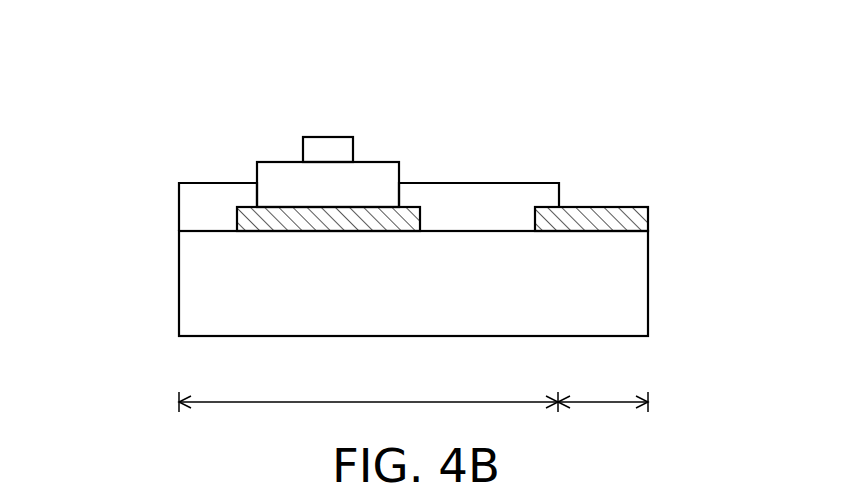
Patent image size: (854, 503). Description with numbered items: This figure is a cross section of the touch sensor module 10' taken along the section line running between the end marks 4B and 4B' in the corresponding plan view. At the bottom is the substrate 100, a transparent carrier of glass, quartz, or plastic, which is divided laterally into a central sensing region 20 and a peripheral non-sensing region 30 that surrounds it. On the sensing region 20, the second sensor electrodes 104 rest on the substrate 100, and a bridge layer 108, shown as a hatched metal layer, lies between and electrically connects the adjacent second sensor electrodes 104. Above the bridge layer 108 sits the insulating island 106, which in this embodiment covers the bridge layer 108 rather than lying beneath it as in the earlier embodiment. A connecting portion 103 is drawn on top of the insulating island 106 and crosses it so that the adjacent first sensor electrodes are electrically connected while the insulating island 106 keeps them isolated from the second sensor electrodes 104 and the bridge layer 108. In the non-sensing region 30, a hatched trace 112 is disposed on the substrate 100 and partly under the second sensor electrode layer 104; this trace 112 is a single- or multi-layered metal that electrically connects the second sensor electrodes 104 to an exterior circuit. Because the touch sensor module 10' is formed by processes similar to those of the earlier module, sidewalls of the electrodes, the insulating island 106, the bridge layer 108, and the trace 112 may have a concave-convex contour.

The touch sensor module 10' is at (69, 64).
The section line 4B-4B' end 4B is at (177, 54).
The section line 4B-4B' end 4B' is at (649, 54).
The substrate 100 is at (437, 299).
The second sensor electrodes 104 is at (208, 193).
The bridge layer 108 is at (285, 217).
The traces 112 is at (647, 215).
The insulating island 106 is at (375, 173).
The connecting portion 103 is at (328, 148).
The sensing region 20 is at (387, 390).
The non-sensing region 30 is at (620, 390).